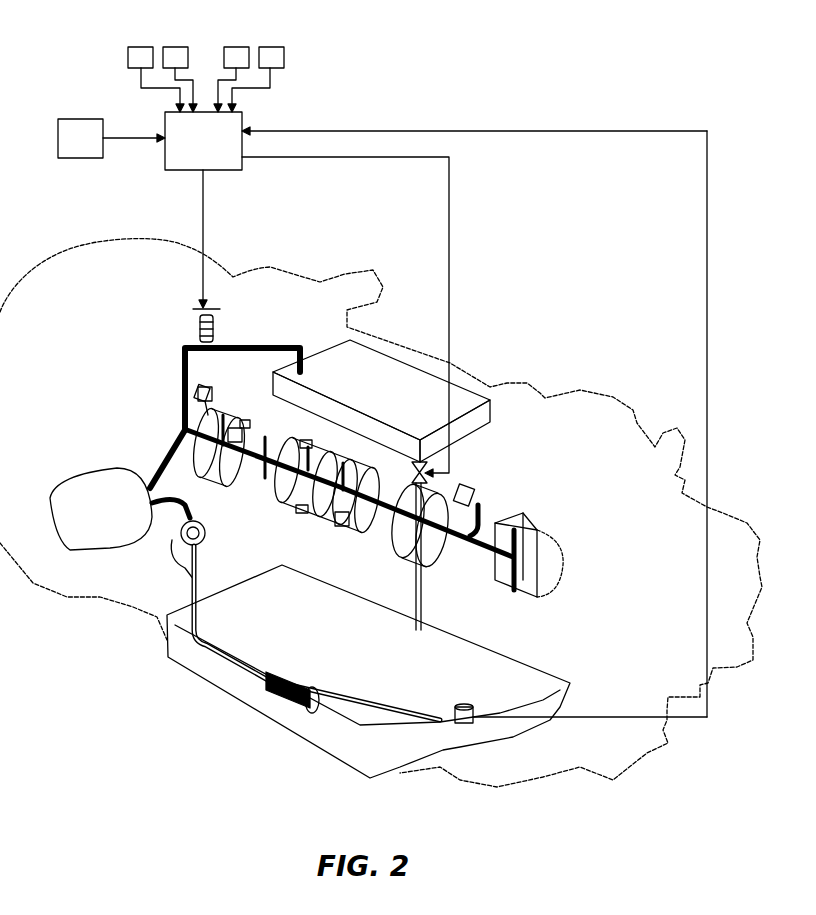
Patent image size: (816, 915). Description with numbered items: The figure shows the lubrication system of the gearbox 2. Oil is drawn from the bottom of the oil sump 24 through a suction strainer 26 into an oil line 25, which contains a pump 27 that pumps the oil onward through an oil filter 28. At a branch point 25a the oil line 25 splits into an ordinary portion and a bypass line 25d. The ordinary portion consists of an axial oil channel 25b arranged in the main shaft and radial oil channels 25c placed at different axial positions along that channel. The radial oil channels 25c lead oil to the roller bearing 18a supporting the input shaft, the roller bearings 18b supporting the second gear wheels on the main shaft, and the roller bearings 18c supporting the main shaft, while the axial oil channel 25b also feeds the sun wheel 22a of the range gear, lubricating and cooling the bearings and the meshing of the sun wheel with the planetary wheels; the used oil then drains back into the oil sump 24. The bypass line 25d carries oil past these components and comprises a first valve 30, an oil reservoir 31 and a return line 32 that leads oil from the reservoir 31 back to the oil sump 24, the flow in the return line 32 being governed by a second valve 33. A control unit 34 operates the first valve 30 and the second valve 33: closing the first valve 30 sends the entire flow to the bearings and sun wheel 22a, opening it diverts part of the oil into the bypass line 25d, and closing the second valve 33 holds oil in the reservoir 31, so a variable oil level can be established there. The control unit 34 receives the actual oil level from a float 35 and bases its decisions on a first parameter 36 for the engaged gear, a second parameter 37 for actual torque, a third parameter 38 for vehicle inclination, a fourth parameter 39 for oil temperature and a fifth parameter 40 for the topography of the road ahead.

The gearbox 2 is at (585, 447).
The roller bearing 18a is at (208, 395).
The roller bearings 18b is at (298, 503).
The roller bearings 18c is at (468, 497).
The sun wheel 22a is at (535, 567).
The oil sump 24 is at (533, 687).
The oil line 25 is at (190, 600).
The branch point 25a is at (180, 427).
The axial oil channel 25b is at (248, 457).
The radial oil channels 25c is at (303, 457).
The bypass line 25d is at (182, 395).
The suction strainer 26 is at (280, 698).
The pump 27 is at (208, 532).
The oil filter 28 is at (85, 533).
The first valve 30 is at (198, 326).
The oil reservoir 31 is at (457, 431).
The return line 32 is at (423, 605).
The second valve 33 is at (413, 463).
The control unit 34 is at (197, 148).
The float 35 is at (465, 713).
The first parameter 36 is at (78, 140).
The second parameter 37 is at (135, 53).
The third parameter 38 is at (175, 53).
The fourth parameter 39 is at (233, 53).
The fifth parameter 40 is at (275, 53).